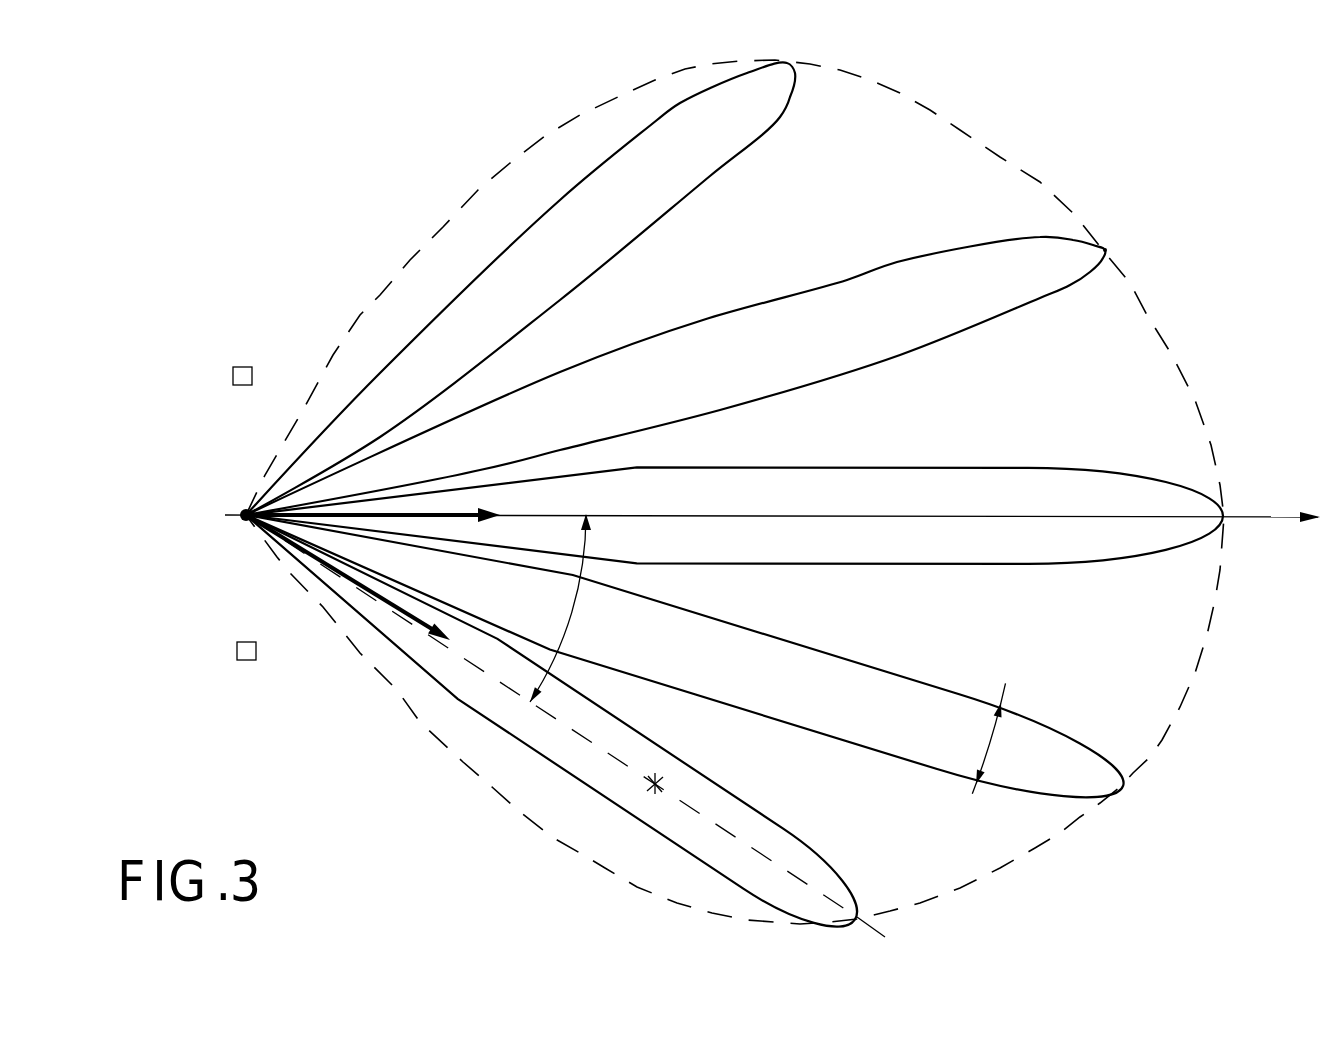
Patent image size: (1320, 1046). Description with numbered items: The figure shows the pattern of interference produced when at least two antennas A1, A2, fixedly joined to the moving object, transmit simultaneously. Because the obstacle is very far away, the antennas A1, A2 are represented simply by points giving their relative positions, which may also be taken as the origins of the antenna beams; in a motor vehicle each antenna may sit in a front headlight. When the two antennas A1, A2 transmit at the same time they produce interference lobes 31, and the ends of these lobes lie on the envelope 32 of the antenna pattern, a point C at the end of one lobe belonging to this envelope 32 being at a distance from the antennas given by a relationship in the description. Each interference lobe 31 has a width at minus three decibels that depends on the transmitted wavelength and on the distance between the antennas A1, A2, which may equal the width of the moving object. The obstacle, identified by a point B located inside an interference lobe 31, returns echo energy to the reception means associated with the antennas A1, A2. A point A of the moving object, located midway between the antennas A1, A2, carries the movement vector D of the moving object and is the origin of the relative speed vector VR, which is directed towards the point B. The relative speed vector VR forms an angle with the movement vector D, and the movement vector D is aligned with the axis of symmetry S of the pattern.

The interference lobe 31 is at (688, 198).
The envelope 32 is at (593, 865).
The point A is at (240, 510).
The first antenna A1 is at (242, 367).
The second antenna A2 is at (246, 661).
The point B is at (565, 726).
The point C is at (1108, 248).
The movement vector D is at (450, 503).
The axis of symmetry S is at (1263, 515).
The relative speed vector VR is at (383, 603).